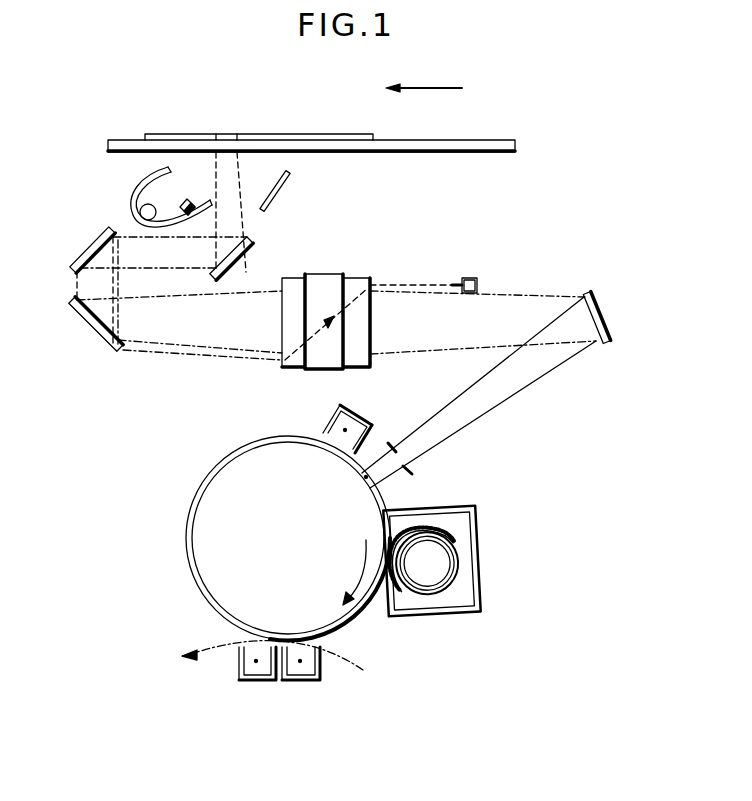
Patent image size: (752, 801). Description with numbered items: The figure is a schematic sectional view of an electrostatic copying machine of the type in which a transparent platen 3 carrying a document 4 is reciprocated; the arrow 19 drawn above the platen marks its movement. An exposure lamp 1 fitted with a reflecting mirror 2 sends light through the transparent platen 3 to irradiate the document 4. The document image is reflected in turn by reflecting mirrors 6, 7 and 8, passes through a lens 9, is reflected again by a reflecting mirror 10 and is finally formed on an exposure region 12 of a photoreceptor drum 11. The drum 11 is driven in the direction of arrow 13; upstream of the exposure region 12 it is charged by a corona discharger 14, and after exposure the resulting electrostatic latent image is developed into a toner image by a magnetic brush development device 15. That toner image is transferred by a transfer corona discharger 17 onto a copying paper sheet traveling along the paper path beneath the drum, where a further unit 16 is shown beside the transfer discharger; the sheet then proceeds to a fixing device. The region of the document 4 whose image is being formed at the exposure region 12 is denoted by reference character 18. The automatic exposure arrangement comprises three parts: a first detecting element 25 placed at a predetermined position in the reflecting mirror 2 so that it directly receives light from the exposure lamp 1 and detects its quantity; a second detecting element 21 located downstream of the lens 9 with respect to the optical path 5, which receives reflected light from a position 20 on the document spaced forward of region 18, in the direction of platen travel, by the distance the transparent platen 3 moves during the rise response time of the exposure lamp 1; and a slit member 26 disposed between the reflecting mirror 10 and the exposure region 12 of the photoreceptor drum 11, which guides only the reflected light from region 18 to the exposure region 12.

The exposure lamp 1 is at (144, 212).
The reflecting mirror 2 is at (140, 182).
The transparent platen 3 is at (453, 152).
The document 4 is at (342, 134).
The optical path 5 is at (250, 226).
The reflecting mirror 6 is at (240, 252).
The reflecting mirror 7 is at (82, 255).
The reflecting mirror 8 is at (93, 326).
The lens 9 is at (330, 285).
The reflecting mirror 10 is at (597, 312).
The photoreceptor drum 11 is at (205, 488).
The exposure region 12 is at (365, 478).
The arrow 13 is at (362, 560).
The corona discharger 14 is at (352, 420).
The magnetic brush development device 15 is at (472, 540).
The transfer charger 16 is at (214, 650).
The transfer corona discharger 17 is at (307, 670).
The exposure region of the document 18 is at (224, 139).
The platen moving direction 19 is at (436, 86).
The position 20 is at (241, 135).
The second detecting element 21 is at (465, 278).
The first detecting element 25 is at (185, 200).
The slit member 26 is at (412, 470).